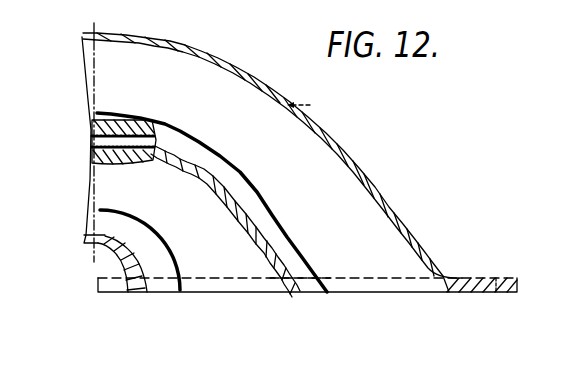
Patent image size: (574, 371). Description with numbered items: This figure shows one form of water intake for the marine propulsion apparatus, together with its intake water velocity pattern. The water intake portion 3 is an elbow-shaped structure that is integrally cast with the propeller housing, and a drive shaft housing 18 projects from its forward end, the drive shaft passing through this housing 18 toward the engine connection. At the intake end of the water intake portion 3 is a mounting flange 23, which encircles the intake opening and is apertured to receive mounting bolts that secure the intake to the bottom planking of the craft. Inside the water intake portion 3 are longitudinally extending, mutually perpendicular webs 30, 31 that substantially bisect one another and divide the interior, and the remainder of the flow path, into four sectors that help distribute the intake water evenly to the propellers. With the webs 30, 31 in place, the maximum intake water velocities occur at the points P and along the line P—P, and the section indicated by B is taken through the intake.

The water intake portion 3 is at (174, 30).
The drive shaft housing 18 is at (381, 172).
The mounting flange 23 is at (473, 278).
The web 30 is at (280, 278).
The web 31 is at (207, 290).
The points of maximum intake water velocity P is at (130, 114).
The section line B- B is at (88, 23).